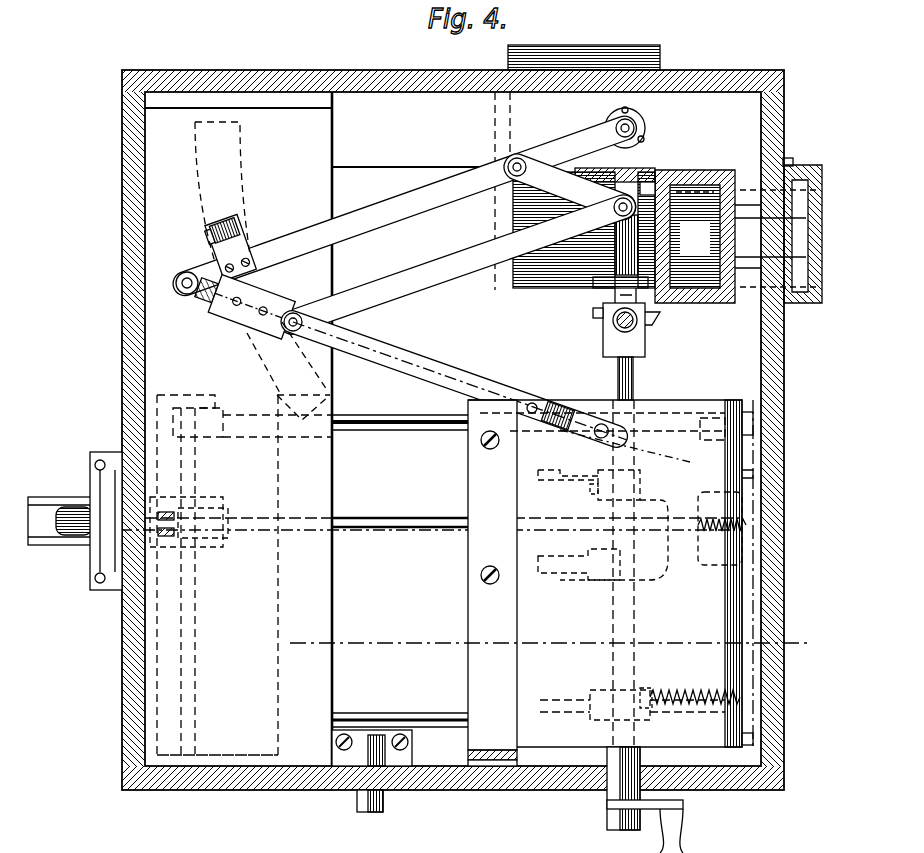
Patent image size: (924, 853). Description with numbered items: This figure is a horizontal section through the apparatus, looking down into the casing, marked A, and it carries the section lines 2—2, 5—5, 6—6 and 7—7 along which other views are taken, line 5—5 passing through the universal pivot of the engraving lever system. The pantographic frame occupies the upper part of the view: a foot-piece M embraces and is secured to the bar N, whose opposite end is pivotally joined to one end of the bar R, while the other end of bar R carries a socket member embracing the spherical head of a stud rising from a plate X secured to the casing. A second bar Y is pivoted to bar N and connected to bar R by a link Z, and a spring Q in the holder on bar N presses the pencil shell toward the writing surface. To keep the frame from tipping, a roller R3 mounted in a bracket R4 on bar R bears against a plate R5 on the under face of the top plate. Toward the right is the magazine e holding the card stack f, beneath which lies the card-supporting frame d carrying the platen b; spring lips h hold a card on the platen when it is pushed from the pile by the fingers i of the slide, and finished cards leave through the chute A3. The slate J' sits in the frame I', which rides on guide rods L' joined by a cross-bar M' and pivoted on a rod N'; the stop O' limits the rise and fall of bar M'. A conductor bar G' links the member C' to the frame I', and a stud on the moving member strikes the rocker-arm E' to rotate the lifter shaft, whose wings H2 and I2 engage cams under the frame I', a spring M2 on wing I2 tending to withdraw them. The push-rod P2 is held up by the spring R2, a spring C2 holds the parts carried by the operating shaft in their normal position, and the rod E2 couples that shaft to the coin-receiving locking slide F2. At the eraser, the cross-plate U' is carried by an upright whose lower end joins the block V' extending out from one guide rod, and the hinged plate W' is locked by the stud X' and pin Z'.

The casing A is at (514, 780).
The chute A3 is at (662, 68).
The card-holder or stack f is at (682, 292).
The magazine e is at (707, 300).
The platen or card-holding table b is at (642, 236).
The card-supporting plate or frame d is at (742, 182).
The fingers i is at (750, 272).
The spring lips h is at (652, 185).
The spring R2 is at (614, 326).
The push-rod or shifter arm P2 is at (628, 330).
The section line 5— 5 is at (618, 110).
The bar R is at (310, 246).
The bracket R4 is at (256, 238).
The roller R3 is at (240, 218).
The link Z is at (569, 168).
The second bar Y is at (444, 275).
The foot-piece M is at (243, 312).
The bar N is at (454, 379).
The spring Q is at (535, 401).
The plate X is at (486, 217).
The section line 2— 2 is at (178, 276).
The plate R5 is at (275, 362).
The rod N' is at (244, 575).
The coin-receiving and locking slide F2 is at (185, 522).
The guide rods L' is at (400, 571).
The rod E2 is at (408, 528).
The block V' is at (378, 775).
The cross-plate U' is at (492, 575).
The plate W' is at (516, 738).
The stud or post X' is at (477, 795).
The cross-bar M' is at (643, 563).
The stop O' is at (773, 573).
The frame I' is at (668, 615).
The pin Z' is at (645, 826).
The slate J' is at (632, 672).
The wing or lifter-arm H2 is at (630, 486).
The rocker-arm E' is at (602, 461).
The actuating or conductor bar G' is at (579, 583).
The member C' is at (617, 558).
The spring C2 is at (722, 528).
The spring M2 is at (695, 682).
The wing or lifter-arm I2 is at (676, 692).
The section line 6— 6 is at (627, 453).
The section line 7— 7 is at (551, 644).